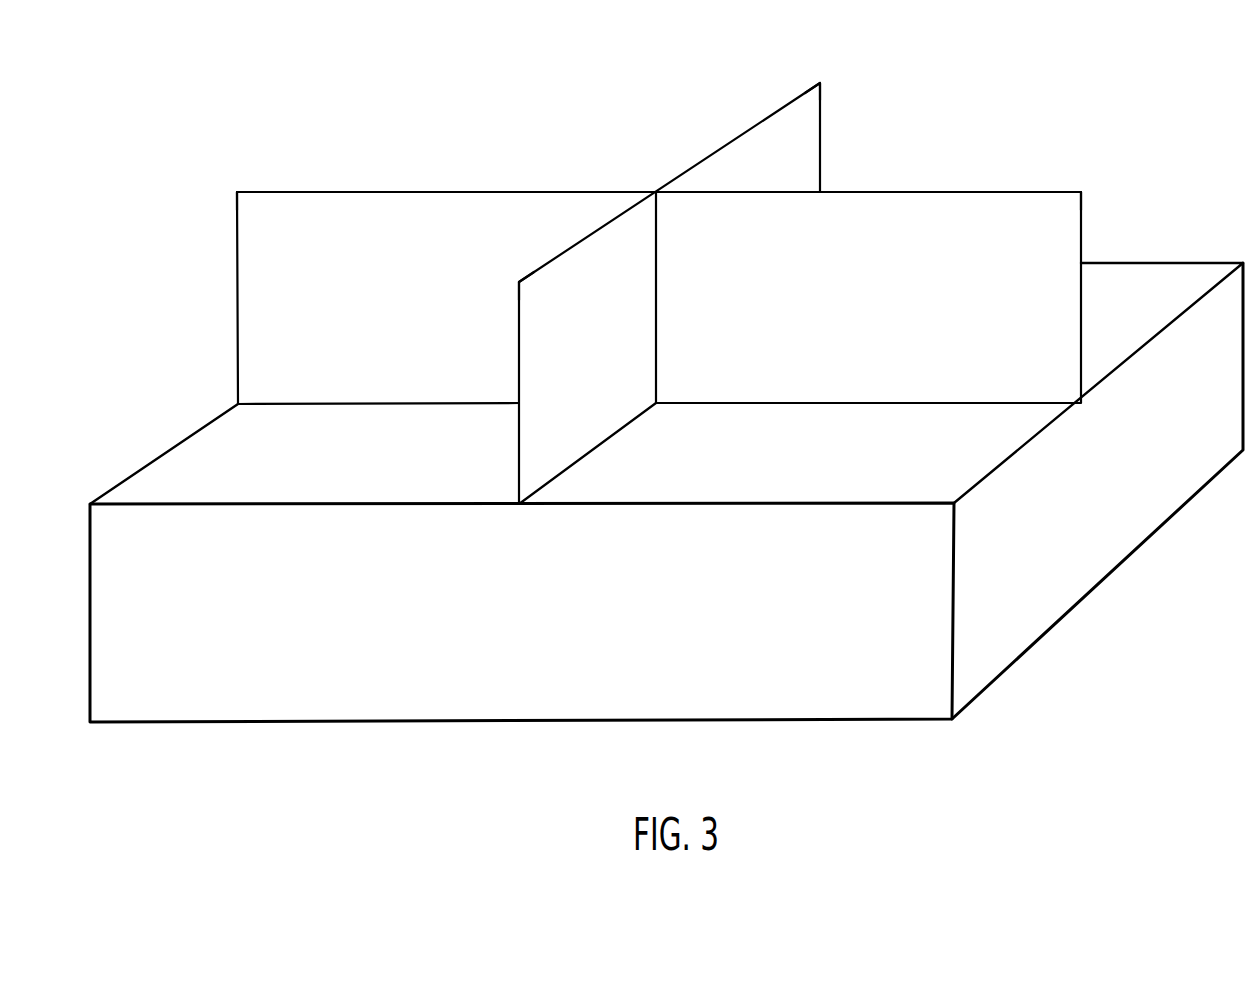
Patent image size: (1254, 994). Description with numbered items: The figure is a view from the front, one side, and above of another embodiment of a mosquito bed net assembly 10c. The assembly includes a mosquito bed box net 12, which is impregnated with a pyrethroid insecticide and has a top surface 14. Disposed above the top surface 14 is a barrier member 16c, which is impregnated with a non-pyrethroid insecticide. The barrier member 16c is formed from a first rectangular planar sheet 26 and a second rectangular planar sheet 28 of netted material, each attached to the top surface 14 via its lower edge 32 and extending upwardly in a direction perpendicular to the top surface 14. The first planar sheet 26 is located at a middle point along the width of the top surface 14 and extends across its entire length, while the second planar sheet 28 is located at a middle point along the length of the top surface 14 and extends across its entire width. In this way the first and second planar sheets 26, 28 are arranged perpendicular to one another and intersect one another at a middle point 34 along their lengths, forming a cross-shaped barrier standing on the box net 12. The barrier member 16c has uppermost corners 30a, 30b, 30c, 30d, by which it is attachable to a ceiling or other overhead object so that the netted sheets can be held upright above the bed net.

The mosquito bed net assembly 10c is at (362, 141).
The mosquito bed box net 12 is at (592, 662).
The top surface 14 is at (179, 456).
The barrier member 16c is at (444, 218).
The first rectangular planar sheet 26 is at (258, 333).
The second rectangular planar sheet 28 is at (625, 228).
The uppermost corner 30a is at (1084, 192).
The uppermost corner 30b is at (237, 192).
The uppermost corner 30c is at (519, 282).
The uppermost corner 30d is at (820, 83).
The lower edge 32 is at (572, 467).
The middle point 34 is at (657, 267).